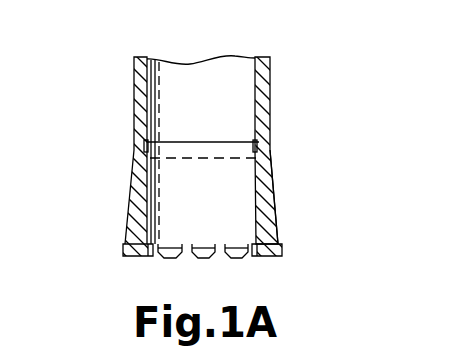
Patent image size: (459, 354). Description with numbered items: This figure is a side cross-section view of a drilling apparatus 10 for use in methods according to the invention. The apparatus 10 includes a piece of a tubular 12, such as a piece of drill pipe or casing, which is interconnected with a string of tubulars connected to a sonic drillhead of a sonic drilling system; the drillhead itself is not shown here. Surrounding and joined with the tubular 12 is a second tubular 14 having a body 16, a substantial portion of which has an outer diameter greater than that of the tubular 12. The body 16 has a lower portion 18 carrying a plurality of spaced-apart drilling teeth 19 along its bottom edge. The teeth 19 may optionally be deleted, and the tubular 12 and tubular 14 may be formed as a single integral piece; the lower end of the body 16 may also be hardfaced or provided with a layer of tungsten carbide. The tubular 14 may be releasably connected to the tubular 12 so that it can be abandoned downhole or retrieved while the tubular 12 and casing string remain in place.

The drilling apparatus 10 is at (229, 163).
The tubular 12 is at (260, 97).
The tubular 14 is at (265, 203).
The body 16 is at (130, 182).
The lower portion 18 is at (282, 244).
The drilling teeth 19 is at (243, 255).